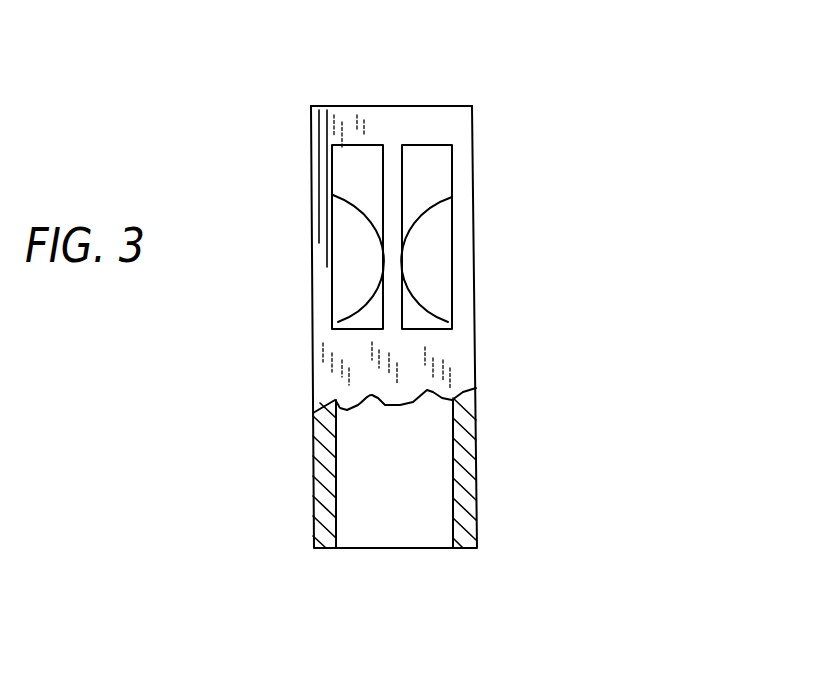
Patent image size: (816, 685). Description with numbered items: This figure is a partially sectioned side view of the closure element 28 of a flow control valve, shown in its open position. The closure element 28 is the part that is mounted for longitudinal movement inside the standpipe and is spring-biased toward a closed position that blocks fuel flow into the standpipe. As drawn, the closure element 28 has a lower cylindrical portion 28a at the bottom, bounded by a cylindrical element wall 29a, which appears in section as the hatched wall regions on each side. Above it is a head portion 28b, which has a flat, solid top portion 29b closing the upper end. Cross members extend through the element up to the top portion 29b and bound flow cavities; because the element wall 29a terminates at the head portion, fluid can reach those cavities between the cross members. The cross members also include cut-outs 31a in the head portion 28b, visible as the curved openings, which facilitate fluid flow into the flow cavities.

The closure element 28 is at (657, 207).
The lower cylindrical portion 28a is at (478, 481).
The head portion 28b is at (473, 191).
The cylindrical element wall 29a is at (465, 517).
The top portion 29b is at (445, 106).
The cut-outs 31a is at (443, 284).